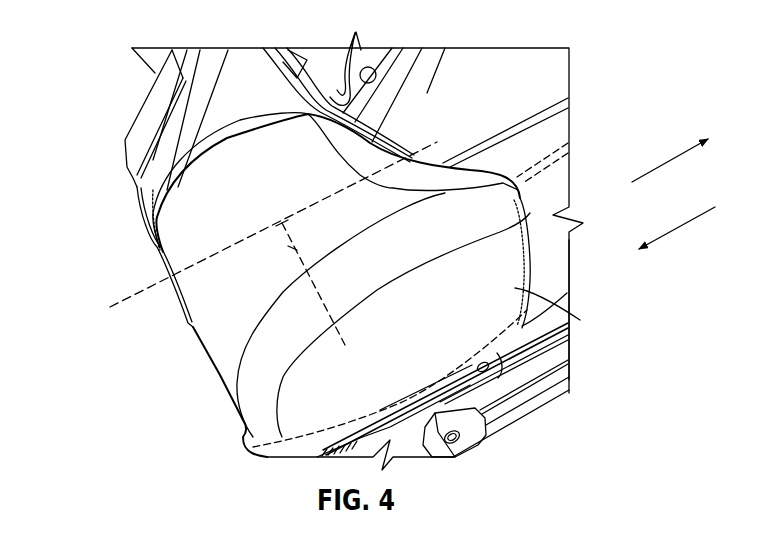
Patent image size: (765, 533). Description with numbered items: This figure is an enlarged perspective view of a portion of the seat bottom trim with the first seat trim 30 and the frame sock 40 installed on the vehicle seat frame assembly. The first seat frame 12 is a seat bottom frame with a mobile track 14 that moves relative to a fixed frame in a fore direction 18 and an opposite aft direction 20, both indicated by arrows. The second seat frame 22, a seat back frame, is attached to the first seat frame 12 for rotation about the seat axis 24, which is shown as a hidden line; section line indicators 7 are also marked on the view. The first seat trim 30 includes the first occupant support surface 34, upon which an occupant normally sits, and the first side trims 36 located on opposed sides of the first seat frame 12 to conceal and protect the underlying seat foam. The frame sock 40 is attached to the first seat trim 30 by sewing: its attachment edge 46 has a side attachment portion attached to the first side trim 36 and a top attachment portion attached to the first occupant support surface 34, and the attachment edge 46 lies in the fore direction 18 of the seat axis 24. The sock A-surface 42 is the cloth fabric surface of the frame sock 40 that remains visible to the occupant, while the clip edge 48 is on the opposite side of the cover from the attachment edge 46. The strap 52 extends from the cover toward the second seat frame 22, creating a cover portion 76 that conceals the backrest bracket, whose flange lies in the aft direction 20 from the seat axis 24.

The section line 7- 7 is at (110, 307).
The first seat frame 12 is at (473, 387).
The mobile track 14 is at (547, 398).
The fore direction 18 is at (677, 155).
The aft direction 20 is at (690, 223).
The second seat frame 22 is at (135, 218).
The seat axis 24 is at (290, 250).
The first seat trim 30 is at (562, 68).
The first occupant support surface 34 is at (492, 92).
The first side trims 36 is at (562, 262).
The frame sock 40 is at (200, 420).
The sock A-surface 42 is at (380, 283).
The attachment edge 46 is at (537, 291).
The clip edge 48 is at (220, 384).
The strap 52 is at (175, 178).
The cover portion 76 is at (238, 133).